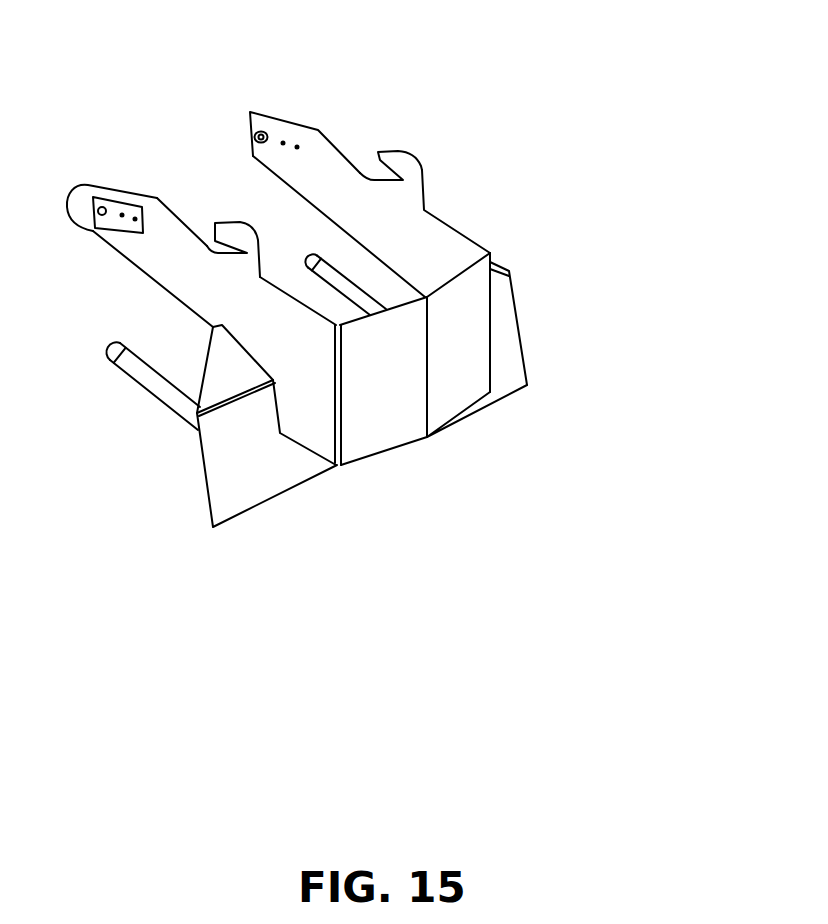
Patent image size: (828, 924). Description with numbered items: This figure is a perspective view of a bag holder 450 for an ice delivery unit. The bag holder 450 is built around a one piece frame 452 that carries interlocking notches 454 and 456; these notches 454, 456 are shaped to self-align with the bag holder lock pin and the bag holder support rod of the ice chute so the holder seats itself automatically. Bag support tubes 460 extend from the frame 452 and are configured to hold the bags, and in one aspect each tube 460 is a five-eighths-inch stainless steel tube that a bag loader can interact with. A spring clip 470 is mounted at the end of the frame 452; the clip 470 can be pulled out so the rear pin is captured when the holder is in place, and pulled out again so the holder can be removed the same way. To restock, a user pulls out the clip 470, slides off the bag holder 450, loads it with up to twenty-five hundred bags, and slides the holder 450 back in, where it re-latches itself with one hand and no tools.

The bag holder 450 is at (524, 111).
The one piece frame 452 is at (347, 173).
The interlocking notch 454 is at (381, 157).
The interlocking notch 456 is at (209, 240).
The bag support tube 460 is at (352, 285).
The spring clip 470 is at (108, 207).